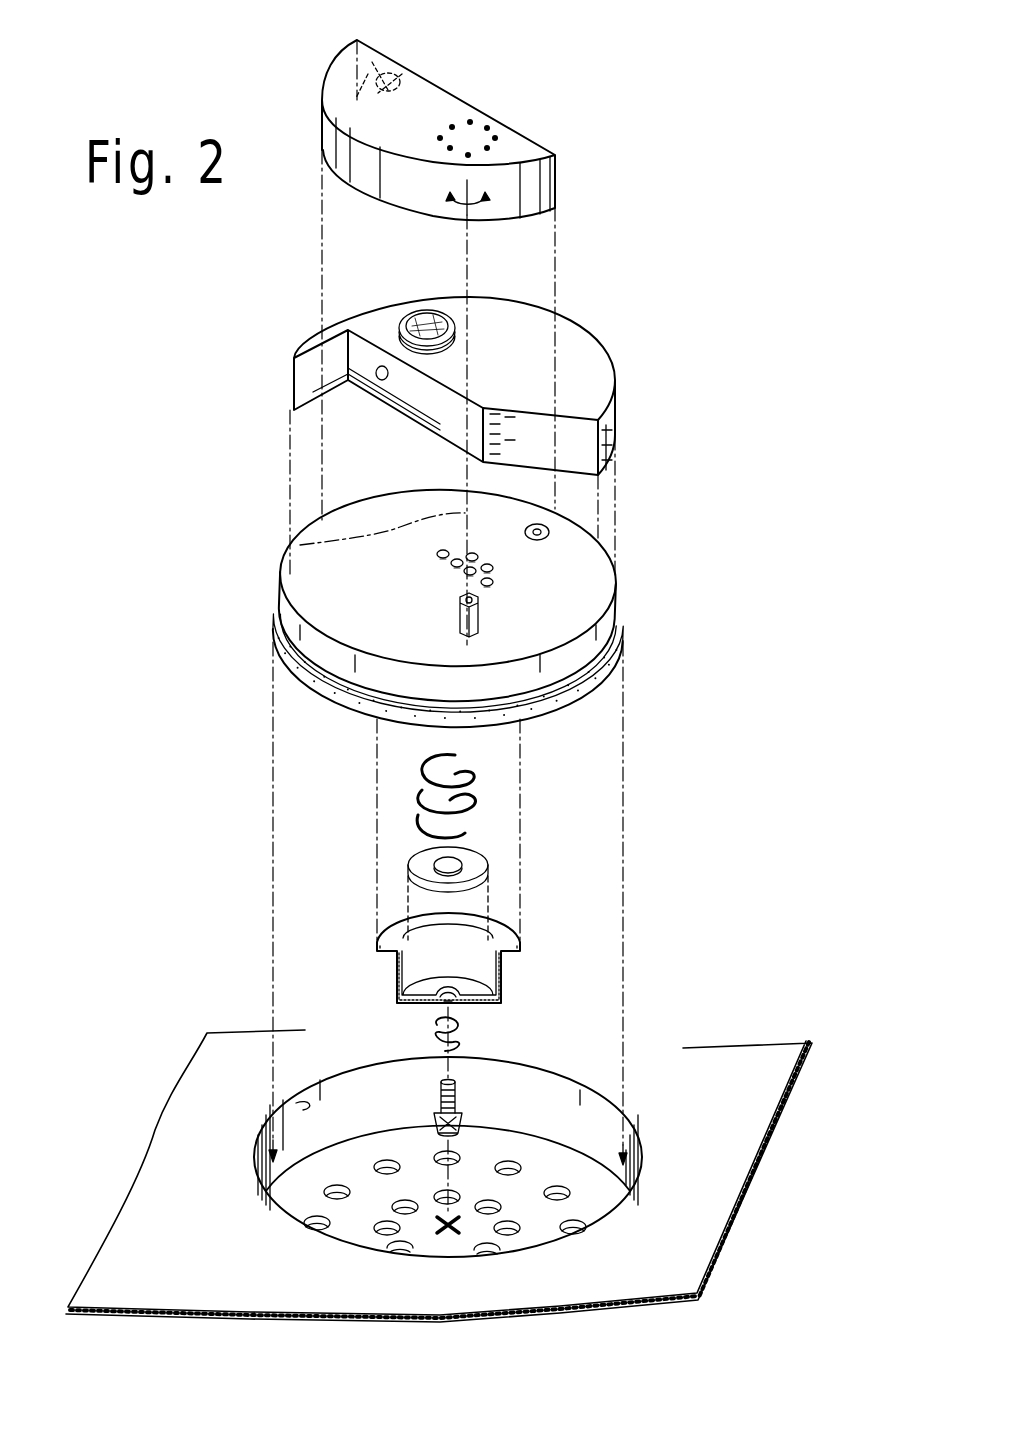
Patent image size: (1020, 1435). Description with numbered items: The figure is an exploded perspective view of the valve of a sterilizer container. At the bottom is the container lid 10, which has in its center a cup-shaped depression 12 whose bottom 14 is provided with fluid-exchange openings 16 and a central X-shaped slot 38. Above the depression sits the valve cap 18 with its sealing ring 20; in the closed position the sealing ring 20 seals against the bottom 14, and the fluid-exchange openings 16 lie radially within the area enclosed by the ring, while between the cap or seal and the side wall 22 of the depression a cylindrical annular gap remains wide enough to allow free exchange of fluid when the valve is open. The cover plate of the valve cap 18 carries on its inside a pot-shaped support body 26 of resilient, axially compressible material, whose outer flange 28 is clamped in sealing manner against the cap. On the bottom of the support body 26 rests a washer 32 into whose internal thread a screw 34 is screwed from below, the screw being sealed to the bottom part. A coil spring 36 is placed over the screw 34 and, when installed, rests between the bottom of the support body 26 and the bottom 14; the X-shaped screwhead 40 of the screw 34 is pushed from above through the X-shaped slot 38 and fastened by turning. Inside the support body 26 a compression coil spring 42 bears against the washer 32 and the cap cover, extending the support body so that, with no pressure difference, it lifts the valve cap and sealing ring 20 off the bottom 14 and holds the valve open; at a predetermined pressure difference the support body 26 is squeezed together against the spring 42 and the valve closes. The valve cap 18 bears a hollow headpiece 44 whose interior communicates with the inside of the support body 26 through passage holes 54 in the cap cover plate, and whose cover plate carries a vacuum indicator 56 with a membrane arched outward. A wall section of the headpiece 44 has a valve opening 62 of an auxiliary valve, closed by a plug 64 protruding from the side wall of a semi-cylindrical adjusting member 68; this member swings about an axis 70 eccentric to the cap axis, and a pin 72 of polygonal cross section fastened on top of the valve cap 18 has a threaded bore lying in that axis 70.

The lid 10 is at (710, 1072).
The cup-shaped depression 12 is at (522, 1078).
The bottom 14 is at (590, 1205).
The fluid-exchange openings 16 is at (512, 1238).
The valve cap 18 is at (290, 579).
The sealing ring 20 is at (600, 697).
The side wall 22 is at (300, 1110).
The pot-shaped support body 26 is at (397, 973).
The outer flange 28 is at (503, 928).
The washer 32 is at (480, 856).
The screw 34 is at (440, 1096).
The coil spring 36 is at (437, 1027).
The X-shaped slot 38 is at (445, 1230).
The X-shaped screwhead 40 is at (458, 1132).
The compression coil spring 42 is at (473, 775).
The hollow headpiece 44 is at (595, 357).
The passage holes 54 is at (494, 580).
The vacuum indicator 56 is at (425, 318).
The valve opening 62 is at (380, 381).
The plug 64 is at (423, 73).
The semi-cylindrical adjusting member 68 is at (527, 145).
The axis 70 is at (300, 545).
The pin 72 is at (460, 615).